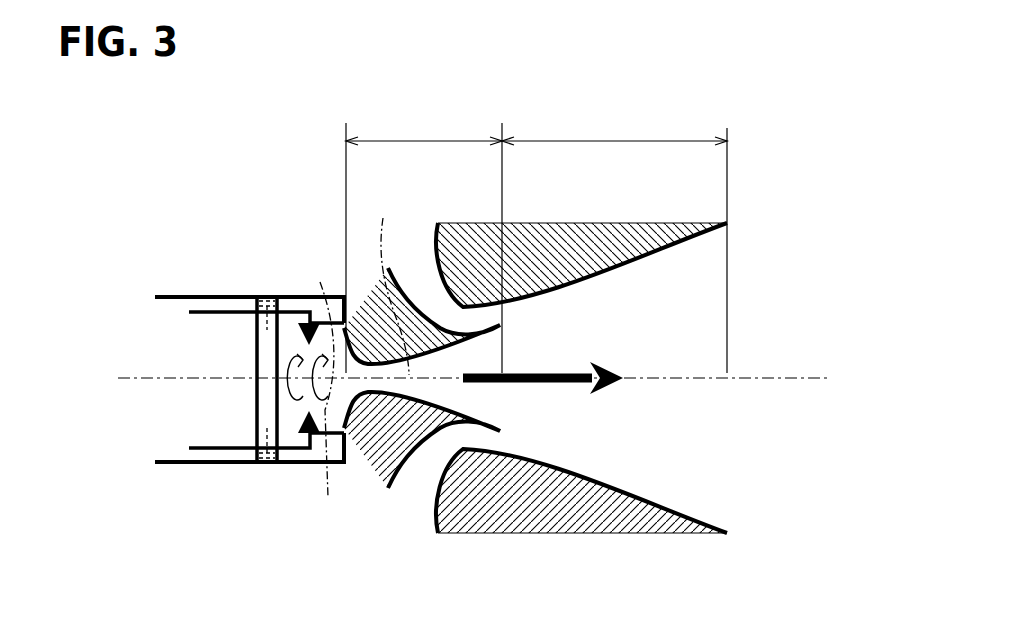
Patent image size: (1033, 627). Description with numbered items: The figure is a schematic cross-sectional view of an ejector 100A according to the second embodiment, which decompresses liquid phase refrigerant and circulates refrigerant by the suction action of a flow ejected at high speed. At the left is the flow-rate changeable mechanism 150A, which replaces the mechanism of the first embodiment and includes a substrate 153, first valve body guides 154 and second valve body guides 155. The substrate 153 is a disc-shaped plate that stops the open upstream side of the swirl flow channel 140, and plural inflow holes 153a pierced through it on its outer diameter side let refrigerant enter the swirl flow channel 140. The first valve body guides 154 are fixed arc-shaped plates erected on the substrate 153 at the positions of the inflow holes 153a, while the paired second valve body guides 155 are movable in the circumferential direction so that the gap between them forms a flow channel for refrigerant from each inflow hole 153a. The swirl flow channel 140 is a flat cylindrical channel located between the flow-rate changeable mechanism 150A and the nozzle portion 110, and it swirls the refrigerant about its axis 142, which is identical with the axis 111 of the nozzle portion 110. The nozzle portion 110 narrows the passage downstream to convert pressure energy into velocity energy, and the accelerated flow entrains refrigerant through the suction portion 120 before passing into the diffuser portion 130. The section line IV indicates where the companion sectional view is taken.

The ejector 100A is at (283, 165).
The flow-rate changeable mechanism 150A is at (245, 285).
The substrate 153 is at (257, 360).
The inflow holes 153a is at (255, 330).
The first valve body guides 154 is at (300, 295).
The second valve body guides 155 is at (307, 466).
The swirl flow channel 140 is at (333, 320).
The axis 142 is at (325, 402).
The nozzle portion 110 is at (427, 139).
The axis 111 is at (422, 340).
The diffuser portion 130 is at (620, 139).
The suction portion 120 is at (423, 468).
The section line IV is at (110, 380).